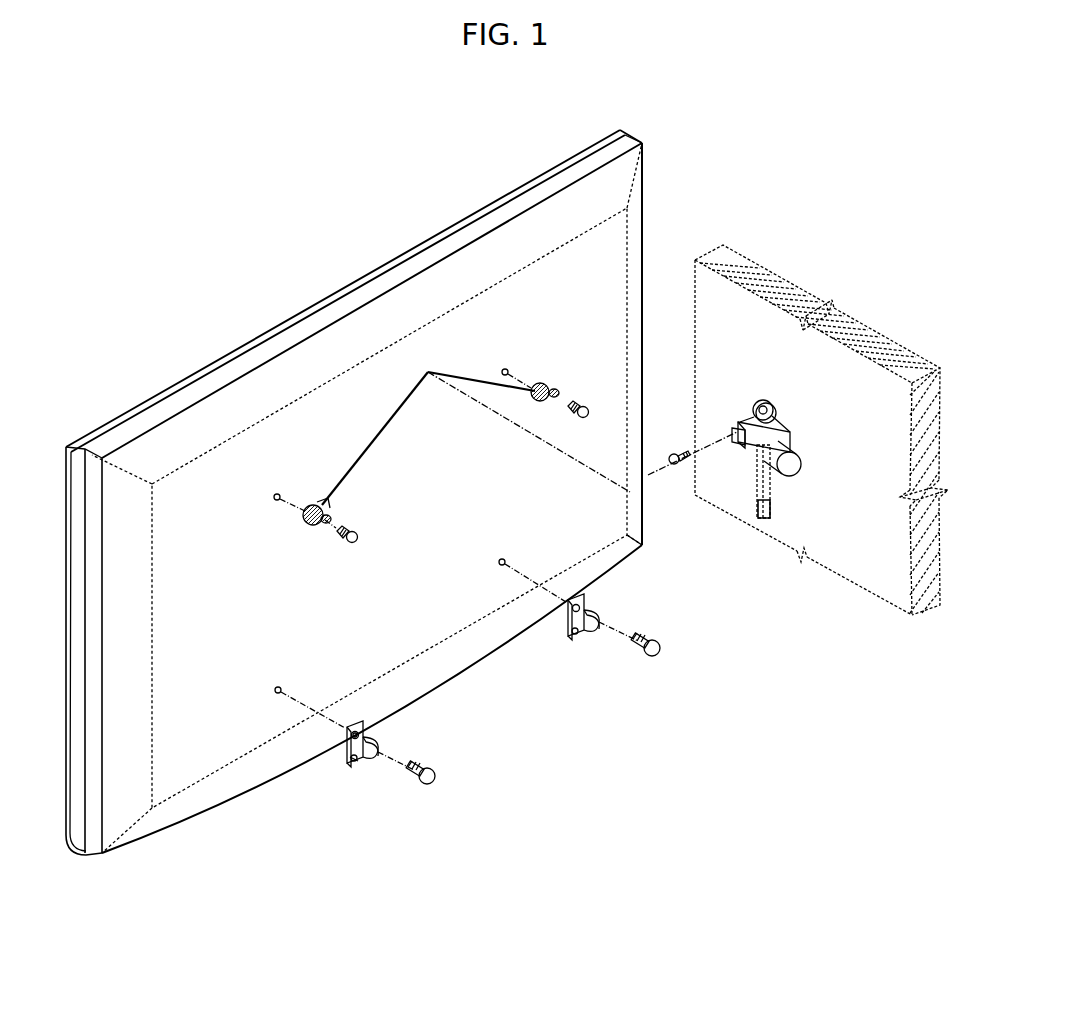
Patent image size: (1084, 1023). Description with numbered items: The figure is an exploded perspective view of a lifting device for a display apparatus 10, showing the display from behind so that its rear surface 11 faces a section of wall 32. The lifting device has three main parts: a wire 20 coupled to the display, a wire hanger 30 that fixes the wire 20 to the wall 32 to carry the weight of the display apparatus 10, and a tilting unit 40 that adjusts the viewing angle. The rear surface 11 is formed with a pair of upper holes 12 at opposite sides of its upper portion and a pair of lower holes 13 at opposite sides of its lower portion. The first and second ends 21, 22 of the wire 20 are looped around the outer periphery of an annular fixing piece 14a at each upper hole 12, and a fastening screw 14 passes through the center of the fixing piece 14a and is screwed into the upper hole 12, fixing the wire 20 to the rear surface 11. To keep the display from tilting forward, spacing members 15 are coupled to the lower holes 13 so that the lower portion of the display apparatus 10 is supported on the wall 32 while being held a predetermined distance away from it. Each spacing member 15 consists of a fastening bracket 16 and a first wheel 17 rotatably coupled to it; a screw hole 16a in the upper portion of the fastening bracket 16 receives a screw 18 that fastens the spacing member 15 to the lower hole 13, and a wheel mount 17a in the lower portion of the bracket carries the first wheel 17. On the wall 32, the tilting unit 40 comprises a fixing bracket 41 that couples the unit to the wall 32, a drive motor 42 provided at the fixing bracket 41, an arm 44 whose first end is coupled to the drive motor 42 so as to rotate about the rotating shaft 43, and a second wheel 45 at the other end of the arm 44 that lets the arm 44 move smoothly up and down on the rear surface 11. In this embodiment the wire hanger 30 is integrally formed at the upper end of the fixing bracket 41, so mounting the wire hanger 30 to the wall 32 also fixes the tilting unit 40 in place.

The display apparatus 10 is at (309, 289).
The rear surface 11 is at (215, 752).
The upper holes 12 is at (507, 370).
The lower holes 13 is at (278, 687).
The fastening screw 14 is at (357, 541).
The annular fixing piece 14a is at (320, 524).
The spacing members 15 is at (479, 708).
The fastening bracket 16 is at (372, 731).
The screw hole 16a is at (352, 726).
The first wheel 17 is at (378, 752).
The wheel mount 17a is at (352, 766).
The screw 18 is at (426, 784).
The wire 20 is at (428, 421).
The first end 21 is at (320, 502).
The second end 22 is at (545, 386).
The wire hanger 30 is at (760, 400).
The wall 32 is at (868, 590).
The tilting unit 40 is at (760, 464).
The fixing bracket 41 is at (780, 418).
The drive motor 42 is at (792, 472).
The rotating shaft 43 is at (738, 444).
The arm 44 is at (757, 503).
The second wheel 45 is at (757, 520).